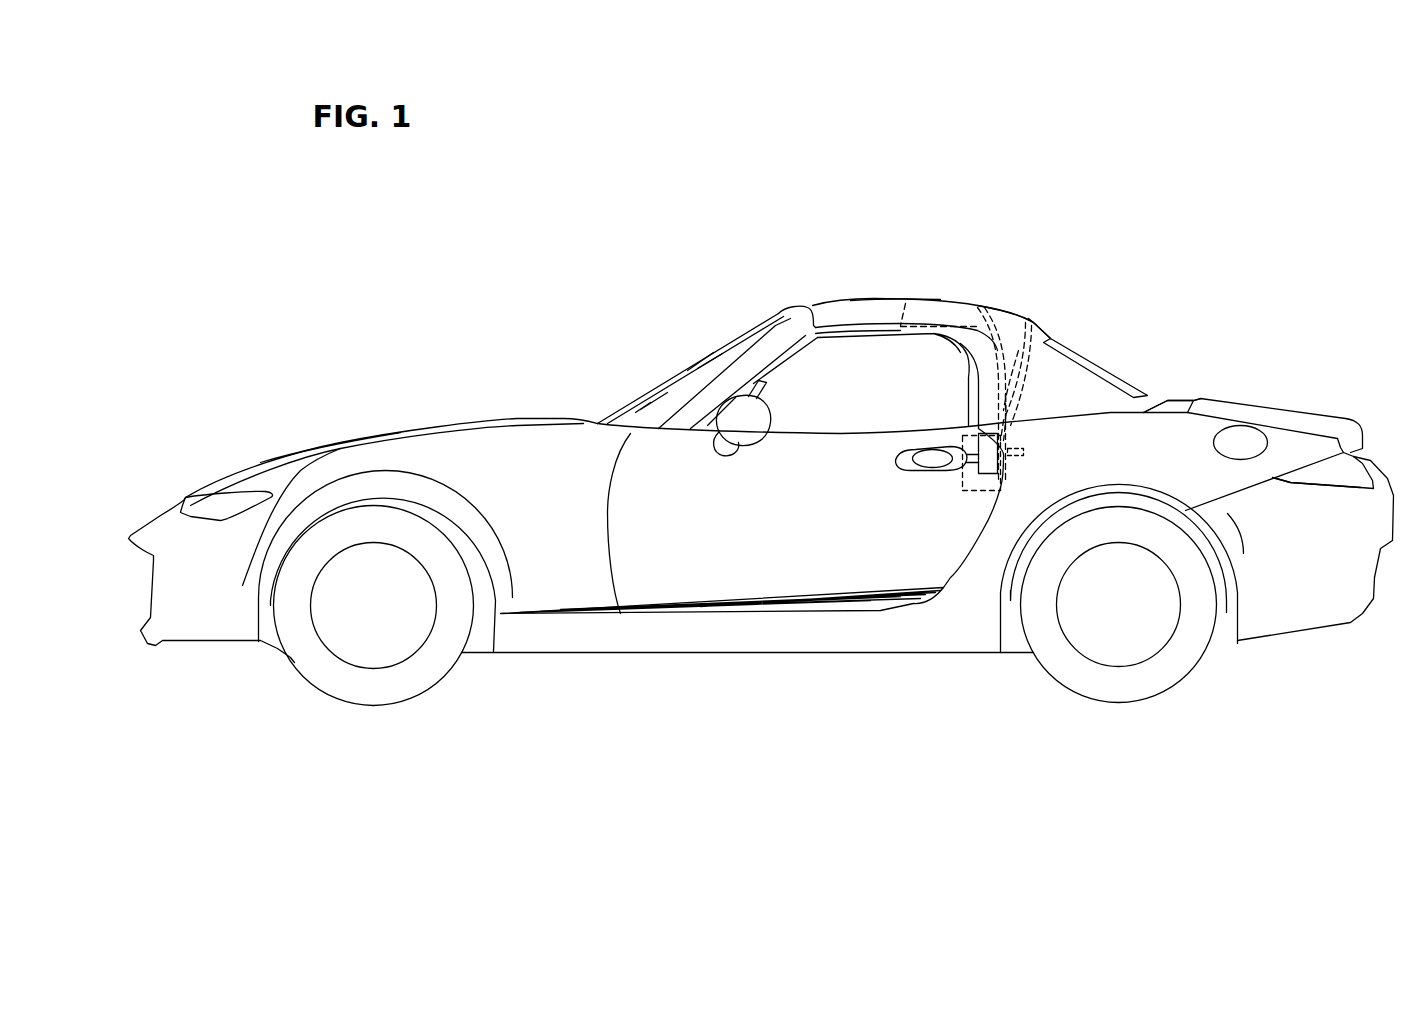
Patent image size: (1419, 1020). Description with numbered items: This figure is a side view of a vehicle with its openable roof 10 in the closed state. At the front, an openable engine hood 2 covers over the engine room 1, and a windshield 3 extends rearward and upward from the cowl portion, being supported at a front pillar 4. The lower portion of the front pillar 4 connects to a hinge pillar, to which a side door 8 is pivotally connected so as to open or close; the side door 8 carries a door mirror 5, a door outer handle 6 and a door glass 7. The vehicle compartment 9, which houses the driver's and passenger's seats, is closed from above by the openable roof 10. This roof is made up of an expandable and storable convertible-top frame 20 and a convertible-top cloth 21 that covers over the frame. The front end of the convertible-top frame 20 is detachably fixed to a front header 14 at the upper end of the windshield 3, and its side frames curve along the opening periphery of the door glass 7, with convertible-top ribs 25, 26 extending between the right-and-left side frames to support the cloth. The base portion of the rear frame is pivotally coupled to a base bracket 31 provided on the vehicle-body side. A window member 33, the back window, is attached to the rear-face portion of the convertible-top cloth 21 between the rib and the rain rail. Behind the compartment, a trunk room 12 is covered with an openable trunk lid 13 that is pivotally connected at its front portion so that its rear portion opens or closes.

The engine room 1 is at (468, 470).
The engine hood 2 is at (290, 447).
The windshield 3 is at (662, 378).
The front pillar 4 is at (760, 362).
The door mirror 5 is at (750, 433).
The door outer handle 6 is at (925, 468).
The door glass 7 is at (848, 396).
The side door 8 is at (819, 546).
The vehicle compartment 9 is at (912, 368).
The openable roof 10 is at (912, 296).
The trunk room 12 is at (1284, 440).
The trunk lid 13 is at (1252, 402).
The front header 14 is at (790, 308).
The convertible-top frame 20 is at (1035, 336).
The convertible-top cloth 21 is at (1003, 318).
The convertible-top rib 25 is at (1012, 398).
The convertible-top rib 26 is at (1007, 358).
The base bracket 31 is at (968, 484).
The window member 33 is at (1105, 360).